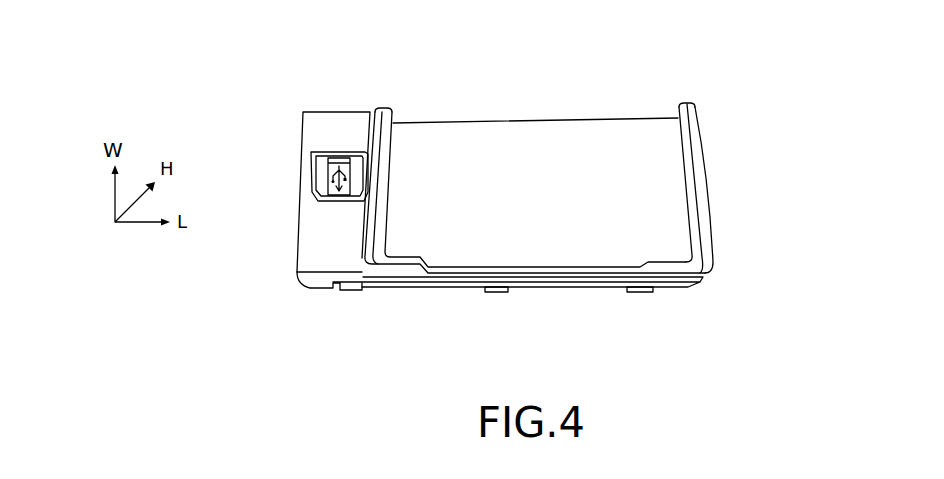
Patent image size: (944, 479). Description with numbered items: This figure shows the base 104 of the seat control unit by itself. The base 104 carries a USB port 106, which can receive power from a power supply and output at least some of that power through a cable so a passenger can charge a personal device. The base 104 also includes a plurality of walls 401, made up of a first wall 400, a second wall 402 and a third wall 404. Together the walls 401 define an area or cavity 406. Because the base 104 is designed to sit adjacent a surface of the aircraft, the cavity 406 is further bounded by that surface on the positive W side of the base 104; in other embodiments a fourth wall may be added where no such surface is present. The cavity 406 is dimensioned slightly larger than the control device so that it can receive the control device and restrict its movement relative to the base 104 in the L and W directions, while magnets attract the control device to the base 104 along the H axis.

The base 104 is at (292, 95).
The USB port 106 is at (325, 168).
The first wall 400 is at (391, 122).
The walls 401 is at (381, 111).
The second wall 402 is at (445, 272).
The third wall 404 is at (695, 212).
The cavity 406 is at (662, 157).